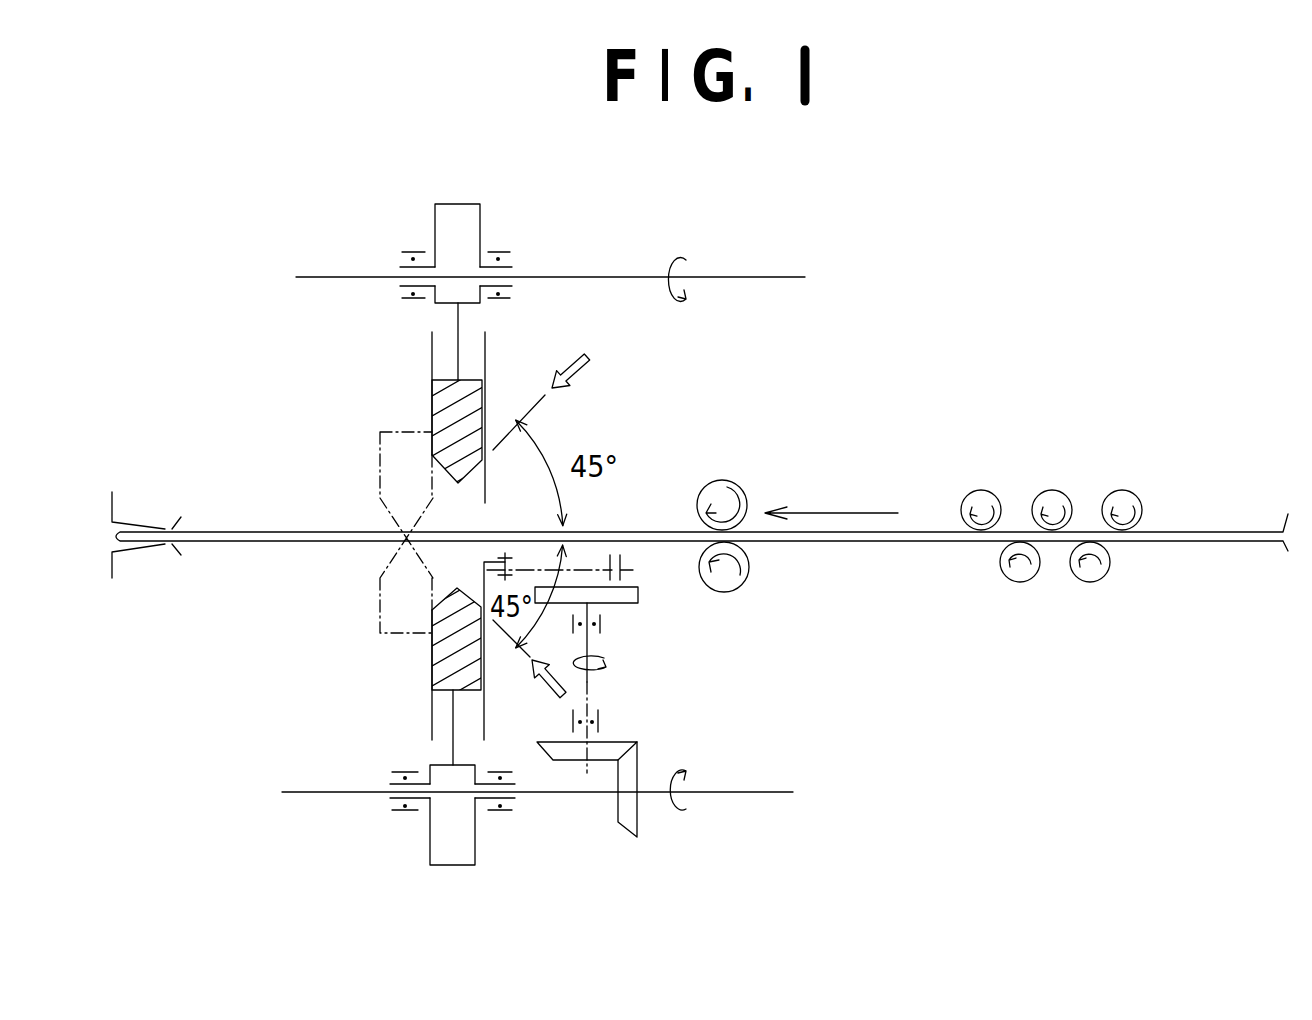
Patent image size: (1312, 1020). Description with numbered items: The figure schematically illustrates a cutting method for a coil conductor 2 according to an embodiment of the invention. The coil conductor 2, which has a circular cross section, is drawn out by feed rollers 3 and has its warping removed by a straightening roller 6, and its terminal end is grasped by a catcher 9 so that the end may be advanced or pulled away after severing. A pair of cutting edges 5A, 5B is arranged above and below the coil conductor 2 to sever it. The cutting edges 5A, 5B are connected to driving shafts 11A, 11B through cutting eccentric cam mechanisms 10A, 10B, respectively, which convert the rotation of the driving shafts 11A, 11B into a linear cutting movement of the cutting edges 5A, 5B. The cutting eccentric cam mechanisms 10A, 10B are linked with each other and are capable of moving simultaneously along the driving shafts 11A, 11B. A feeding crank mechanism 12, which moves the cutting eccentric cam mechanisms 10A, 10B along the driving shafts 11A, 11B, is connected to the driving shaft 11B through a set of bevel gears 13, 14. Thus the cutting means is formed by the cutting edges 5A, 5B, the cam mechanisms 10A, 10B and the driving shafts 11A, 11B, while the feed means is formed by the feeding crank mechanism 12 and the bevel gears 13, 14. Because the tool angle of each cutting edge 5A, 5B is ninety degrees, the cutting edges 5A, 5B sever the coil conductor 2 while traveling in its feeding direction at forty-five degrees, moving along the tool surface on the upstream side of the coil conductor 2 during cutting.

The coil conductor 2 is at (1167, 530).
The feed rollers 3 is at (720, 480).
The straightening roller 6 is at (1117, 487).
The catcher 9 is at (120, 522).
The cutting edge 5A is at (433, 408).
The cutting edge 5B is at (428, 657).
The cutting eccentric cam mechanism 10A is at (435, 228).
The cutting eccentric cam mechanism 10B is at (430, 835).
The driving shaft 11A is at (748, 278).
The driving shaft 11B is at (737, 792).
The feeding crank mechanism 12 is at (623, 605).
The bevel gear 13 is at (603, 740).
The bevel gear 14 is at (638, 768).